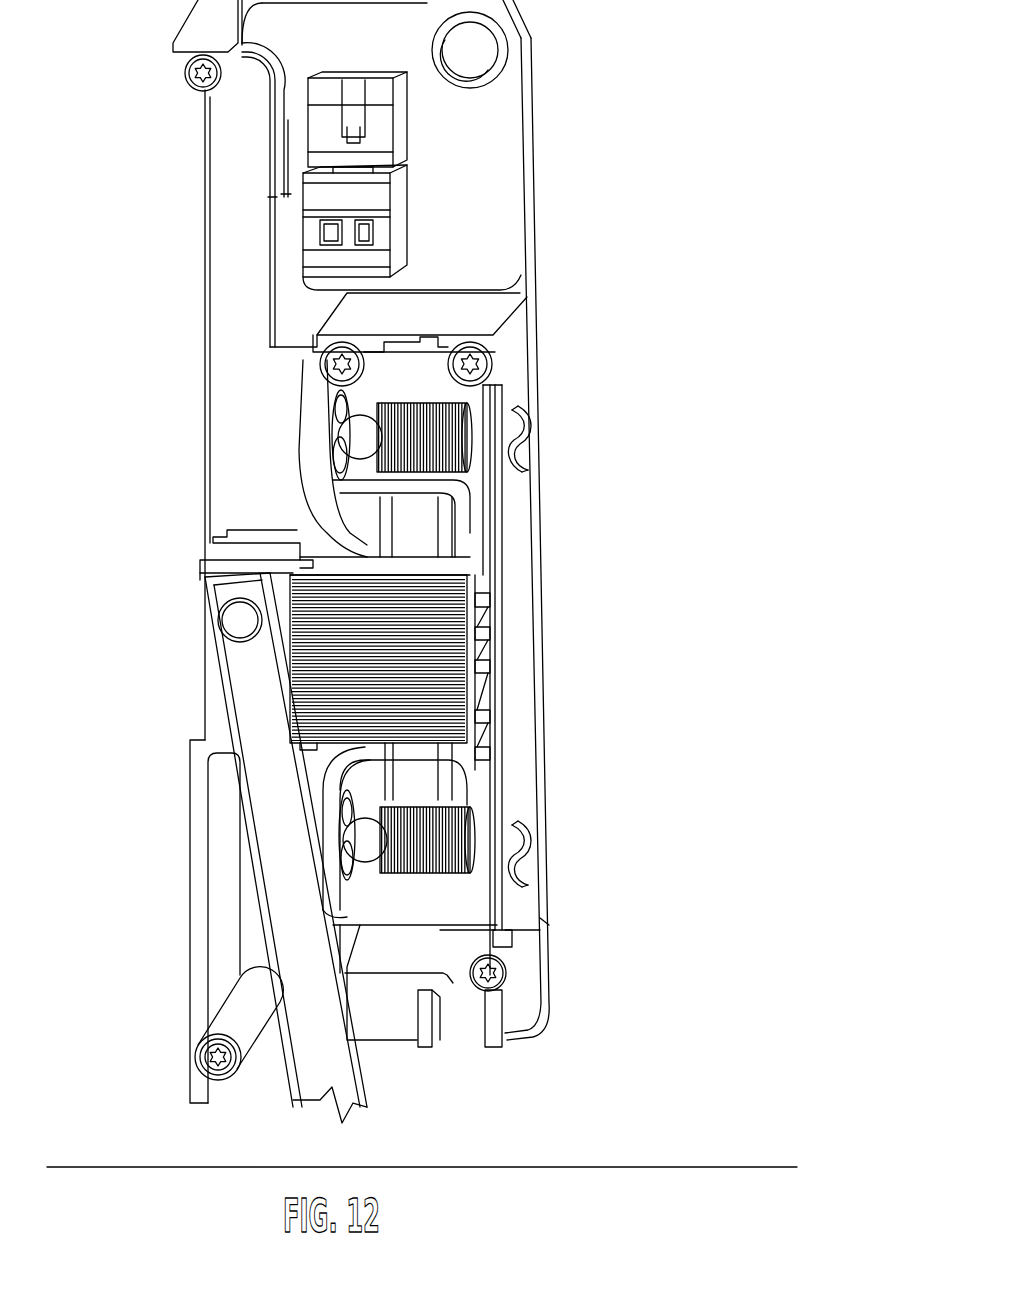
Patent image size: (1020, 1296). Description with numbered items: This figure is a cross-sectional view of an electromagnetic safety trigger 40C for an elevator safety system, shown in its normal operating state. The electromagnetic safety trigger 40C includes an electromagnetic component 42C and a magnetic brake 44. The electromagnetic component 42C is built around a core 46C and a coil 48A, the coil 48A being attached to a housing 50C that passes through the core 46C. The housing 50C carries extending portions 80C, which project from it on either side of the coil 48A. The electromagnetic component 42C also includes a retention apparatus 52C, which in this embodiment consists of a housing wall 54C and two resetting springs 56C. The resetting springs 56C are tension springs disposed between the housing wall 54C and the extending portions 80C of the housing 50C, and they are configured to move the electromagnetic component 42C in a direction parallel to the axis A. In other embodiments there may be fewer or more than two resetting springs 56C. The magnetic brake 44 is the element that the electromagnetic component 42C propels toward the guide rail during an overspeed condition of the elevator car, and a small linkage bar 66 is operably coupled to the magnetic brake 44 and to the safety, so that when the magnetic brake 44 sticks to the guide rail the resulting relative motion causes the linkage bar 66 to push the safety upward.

The electromagnetic safety trigger 40C is at (642, 80).
The electromagnetic component 42C is at (556, 643).
The housing wall 54C is at (540, 538).
The retention apparatus 52C is at (462, 288).
The resetting spring 56C is at (467, 405).
The extending portions 80C is at (313, 425).
The coil 48A is at (415, 535).
The core 46C is at (453, 727).
The housing 50C is at (315, 548).
The magnetic brake 44 is at (213, 705).
The linkage bar 66 is at (290, 1100).
The axis A is at (730, 1168).